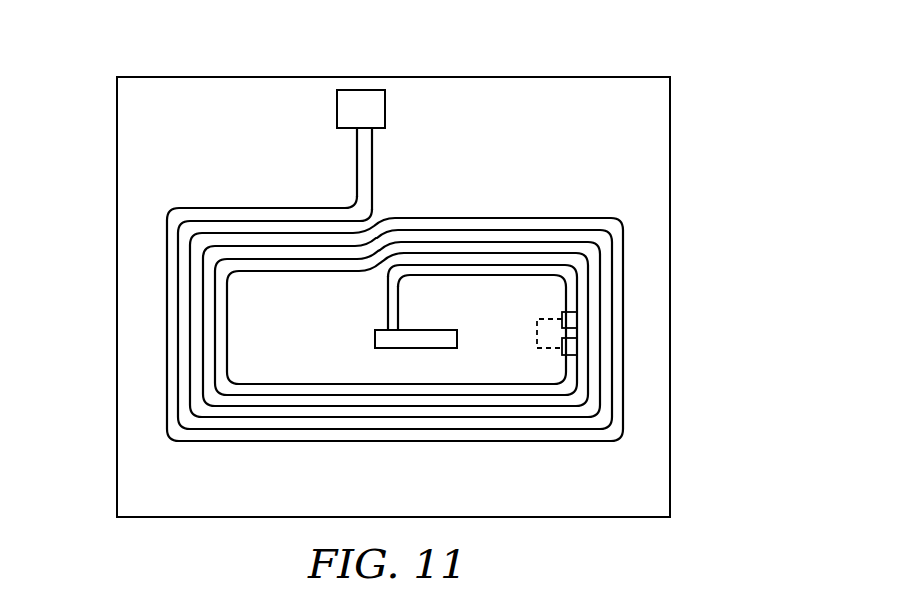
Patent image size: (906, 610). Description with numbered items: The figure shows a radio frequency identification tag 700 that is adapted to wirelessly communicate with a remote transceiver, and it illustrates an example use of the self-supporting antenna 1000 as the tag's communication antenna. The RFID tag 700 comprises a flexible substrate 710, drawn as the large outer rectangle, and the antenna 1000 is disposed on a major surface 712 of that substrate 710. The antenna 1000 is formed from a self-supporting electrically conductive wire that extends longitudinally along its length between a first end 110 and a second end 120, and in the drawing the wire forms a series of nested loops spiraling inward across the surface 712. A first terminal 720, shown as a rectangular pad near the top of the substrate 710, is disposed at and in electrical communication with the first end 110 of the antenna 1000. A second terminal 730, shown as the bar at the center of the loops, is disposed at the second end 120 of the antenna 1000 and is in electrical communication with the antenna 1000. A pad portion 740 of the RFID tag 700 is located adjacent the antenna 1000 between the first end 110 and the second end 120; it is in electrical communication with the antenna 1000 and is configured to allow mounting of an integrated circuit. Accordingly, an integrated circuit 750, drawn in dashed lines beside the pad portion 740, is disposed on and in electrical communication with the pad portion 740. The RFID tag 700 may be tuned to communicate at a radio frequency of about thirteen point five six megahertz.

The RFID tag 700 is at (702, 34).
The flexible substrate 710 is at (117, 165).
The major surface 712 is at (191, 90).
The first terminal 720 is at (351, 90).
The first end 110 is at (374, 138).
The self-supporting antenna 1000 is at (620, 260).
The second end 120 is at (386, 327).
The second terminal 730 is at (432, 349).
The pad portion 740 is at (577, 318).
The integrated circuit 750 is at (547, 349).